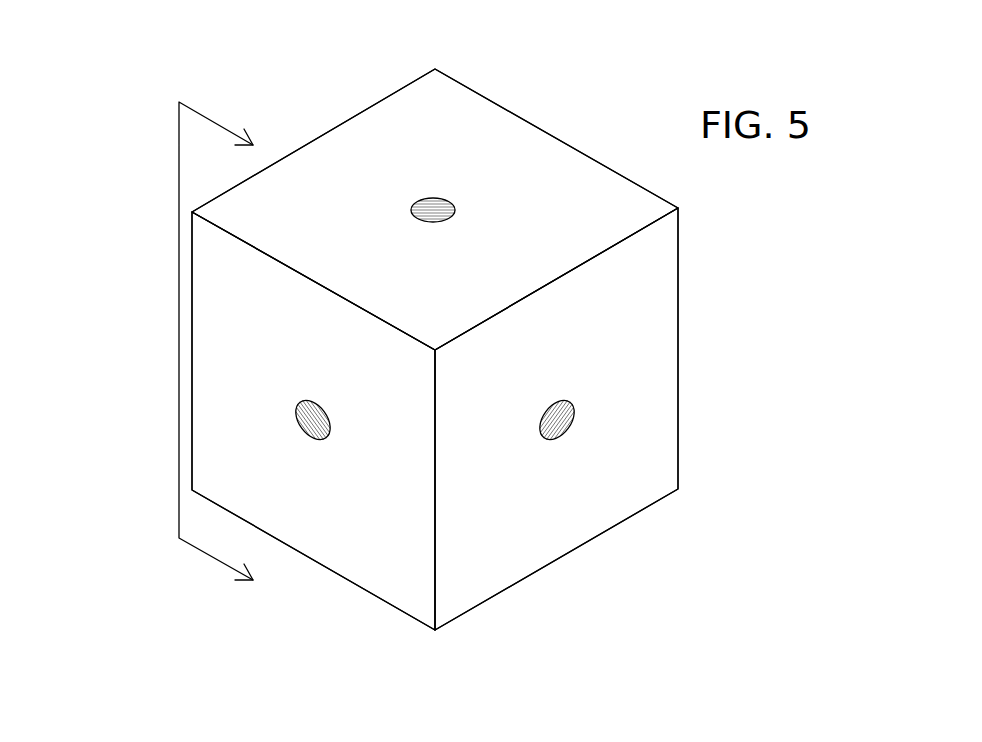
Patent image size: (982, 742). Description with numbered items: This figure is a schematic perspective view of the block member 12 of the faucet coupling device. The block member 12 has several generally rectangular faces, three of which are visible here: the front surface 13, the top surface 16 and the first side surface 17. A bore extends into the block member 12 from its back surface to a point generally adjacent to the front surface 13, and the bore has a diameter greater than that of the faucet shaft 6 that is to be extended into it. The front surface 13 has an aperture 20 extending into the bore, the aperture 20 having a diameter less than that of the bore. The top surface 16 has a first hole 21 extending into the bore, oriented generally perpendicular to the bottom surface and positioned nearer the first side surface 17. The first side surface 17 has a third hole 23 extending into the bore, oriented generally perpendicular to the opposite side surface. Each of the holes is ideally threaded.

The block member 12 is at (688, 197).
The front surface 13 is at (645, 300).
The top surface 16 is at (552, 158).
The first side surface 17 is at (223, 337).
The aperture 20 is at (560, 423).
The first hole 21 is at (433, 208).
The third hole 23 is at (307, 433).
The faucet shaft 6 is at (226, 351).